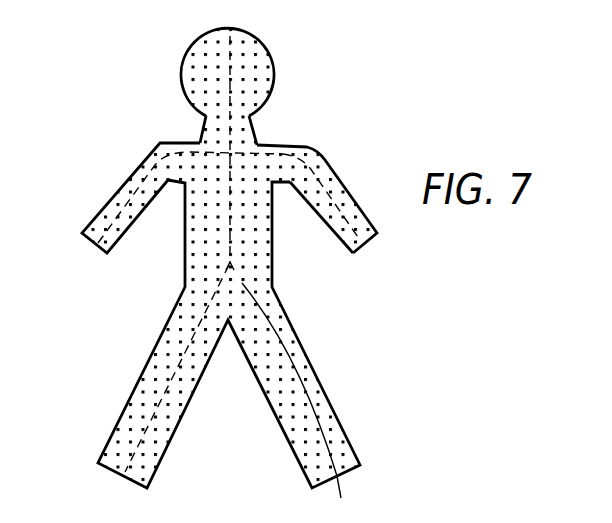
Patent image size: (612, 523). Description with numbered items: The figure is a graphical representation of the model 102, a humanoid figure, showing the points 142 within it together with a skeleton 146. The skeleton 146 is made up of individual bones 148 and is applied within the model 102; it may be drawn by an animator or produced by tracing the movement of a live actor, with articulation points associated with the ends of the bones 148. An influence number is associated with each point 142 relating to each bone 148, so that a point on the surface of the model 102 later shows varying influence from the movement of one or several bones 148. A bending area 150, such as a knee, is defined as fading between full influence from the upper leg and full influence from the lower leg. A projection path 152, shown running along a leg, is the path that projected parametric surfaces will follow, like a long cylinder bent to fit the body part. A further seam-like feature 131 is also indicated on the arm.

The model 102 is at (130, 81).
The skeleton 146 is at (228, 79).
The points 142 is at (115, 202).
The bones 148 is at (228, 221).
The bending area 150 is at (178, 272).
The underarm seam 131 is at (324, 220).
The projection path 152 is at (341, 487).